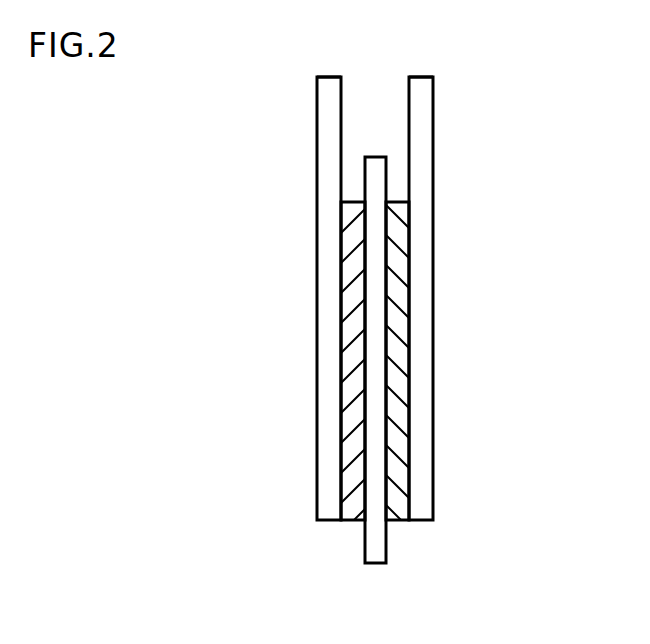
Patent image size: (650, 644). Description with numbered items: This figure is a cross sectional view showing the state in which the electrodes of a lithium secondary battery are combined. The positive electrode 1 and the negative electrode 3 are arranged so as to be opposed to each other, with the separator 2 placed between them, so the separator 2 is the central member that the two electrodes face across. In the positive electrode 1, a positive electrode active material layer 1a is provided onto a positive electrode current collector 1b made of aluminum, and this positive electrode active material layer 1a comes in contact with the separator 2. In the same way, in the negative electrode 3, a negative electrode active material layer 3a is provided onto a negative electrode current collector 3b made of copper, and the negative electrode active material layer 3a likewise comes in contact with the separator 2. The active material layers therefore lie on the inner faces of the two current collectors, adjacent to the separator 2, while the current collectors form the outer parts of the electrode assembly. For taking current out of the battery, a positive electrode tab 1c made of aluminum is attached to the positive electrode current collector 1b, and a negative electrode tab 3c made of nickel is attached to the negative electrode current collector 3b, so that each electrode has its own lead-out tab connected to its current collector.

The positive electrode 1 is at (291, 313).
The positive electrode active material layer 1a is at (351, 508).
The positive electrode current collector 1b is at (332, 388).
The positive electrode tab 1c is at (327, 81).
The separator 2 is at (375, 162).
The negative electrode 3 is at (462, 322).
The negative electrode active material layer 3a is at (395, 508).
The negative electrode current collector 3b is at (422, 390).
The negative electrode tab 3c is at (418, 82).